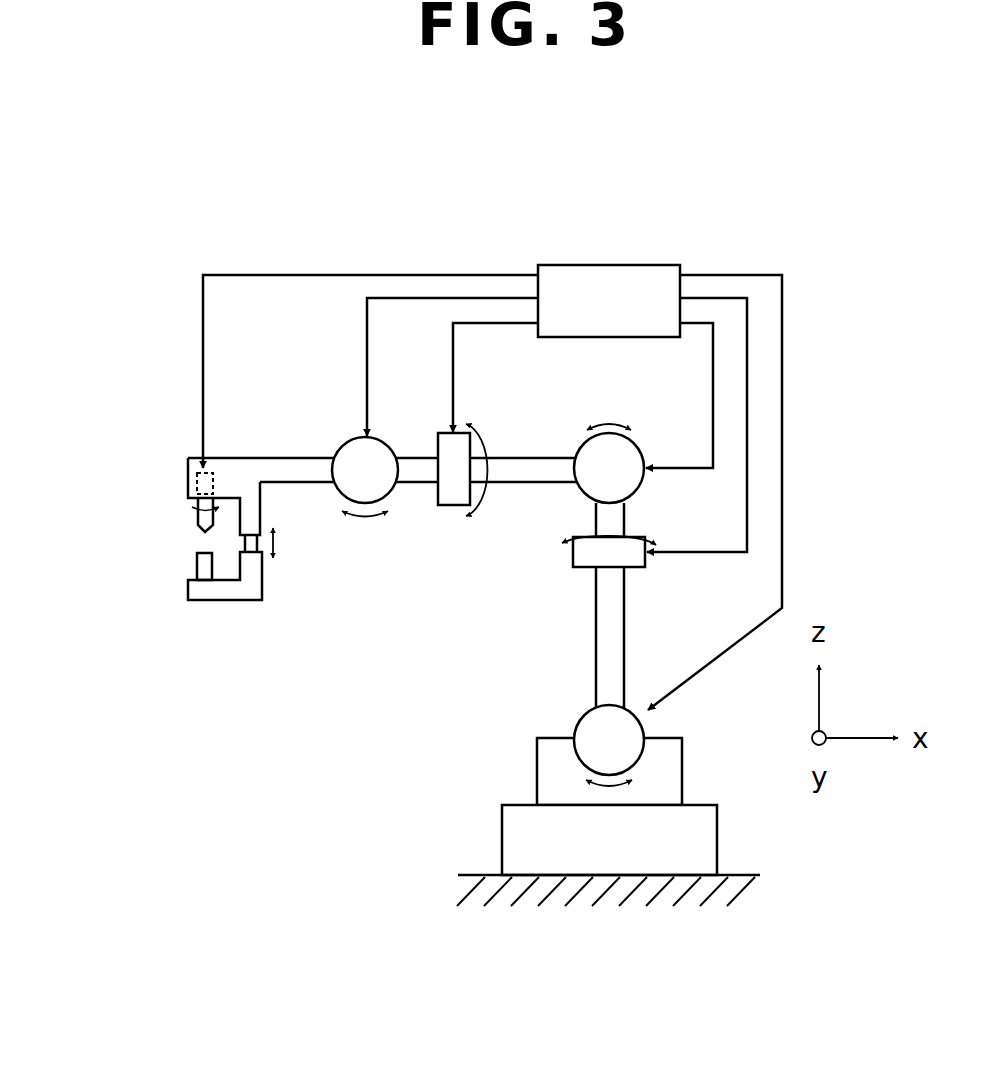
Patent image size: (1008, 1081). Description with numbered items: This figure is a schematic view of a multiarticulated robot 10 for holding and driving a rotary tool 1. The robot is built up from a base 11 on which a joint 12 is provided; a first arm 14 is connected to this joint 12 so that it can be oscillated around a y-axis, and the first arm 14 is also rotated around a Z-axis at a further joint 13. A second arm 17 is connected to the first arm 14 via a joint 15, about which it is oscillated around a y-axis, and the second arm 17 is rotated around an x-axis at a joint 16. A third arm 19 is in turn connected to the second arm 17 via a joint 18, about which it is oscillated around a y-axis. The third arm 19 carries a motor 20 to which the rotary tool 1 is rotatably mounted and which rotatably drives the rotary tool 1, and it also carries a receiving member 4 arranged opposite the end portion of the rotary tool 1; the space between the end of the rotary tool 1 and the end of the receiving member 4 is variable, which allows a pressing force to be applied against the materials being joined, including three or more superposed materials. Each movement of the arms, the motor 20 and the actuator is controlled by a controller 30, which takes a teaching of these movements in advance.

The multiarticulated robot 10 is at (328, 902).
The base 11 is at (717, 835).
The joint 12 is at (575, 722).
The joint 13 is at (578, 567).
The first arm 14 is at (623, 635).
The joint 15 is at (645, 483).
The joint 16 is at (452, 507).
The second arm 17 is at (528, 454).
The joint 18 is at (390, 452).
The third arm 19 is at (256, 457).
The motor 20 is at (195, 485).
The rotary tool 1 is at (195, 520).
The receiving member 4 is at (193, 573).
The controller 30 is at (603, 265).